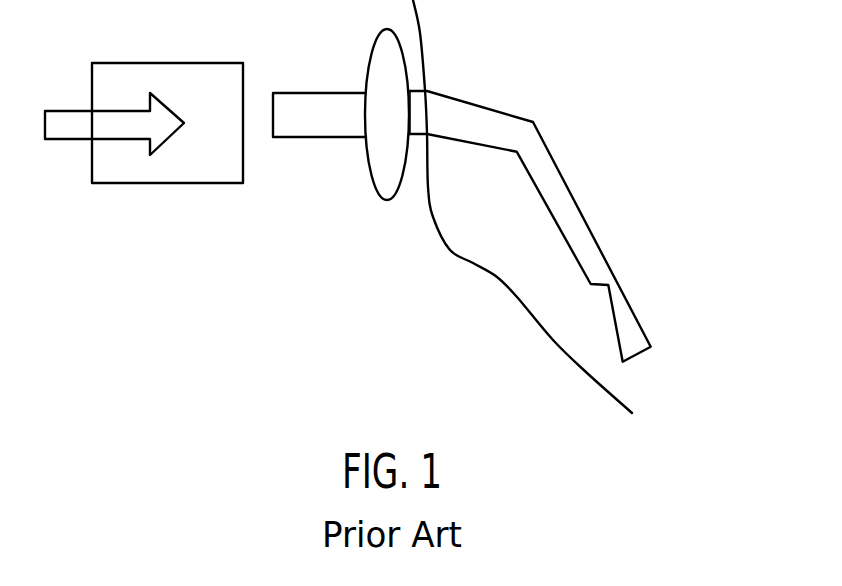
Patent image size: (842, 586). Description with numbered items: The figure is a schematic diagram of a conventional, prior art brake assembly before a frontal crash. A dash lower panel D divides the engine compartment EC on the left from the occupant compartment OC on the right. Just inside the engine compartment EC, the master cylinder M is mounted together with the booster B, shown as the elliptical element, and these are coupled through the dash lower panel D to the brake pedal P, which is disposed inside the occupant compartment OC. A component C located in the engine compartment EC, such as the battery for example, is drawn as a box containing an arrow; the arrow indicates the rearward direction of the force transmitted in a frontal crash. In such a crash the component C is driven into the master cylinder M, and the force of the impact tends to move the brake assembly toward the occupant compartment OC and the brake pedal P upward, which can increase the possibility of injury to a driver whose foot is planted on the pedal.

The component C is at (133, 62).
The master cylinder M is at (319, 93).
The booster B is at (373, 177).
The brake pedal P is at (568, 217).
The dash lower panel D is at (553, 337).
The engine compartment EC is at (270, 378).
The occupant compartment OC is at (702, 375).